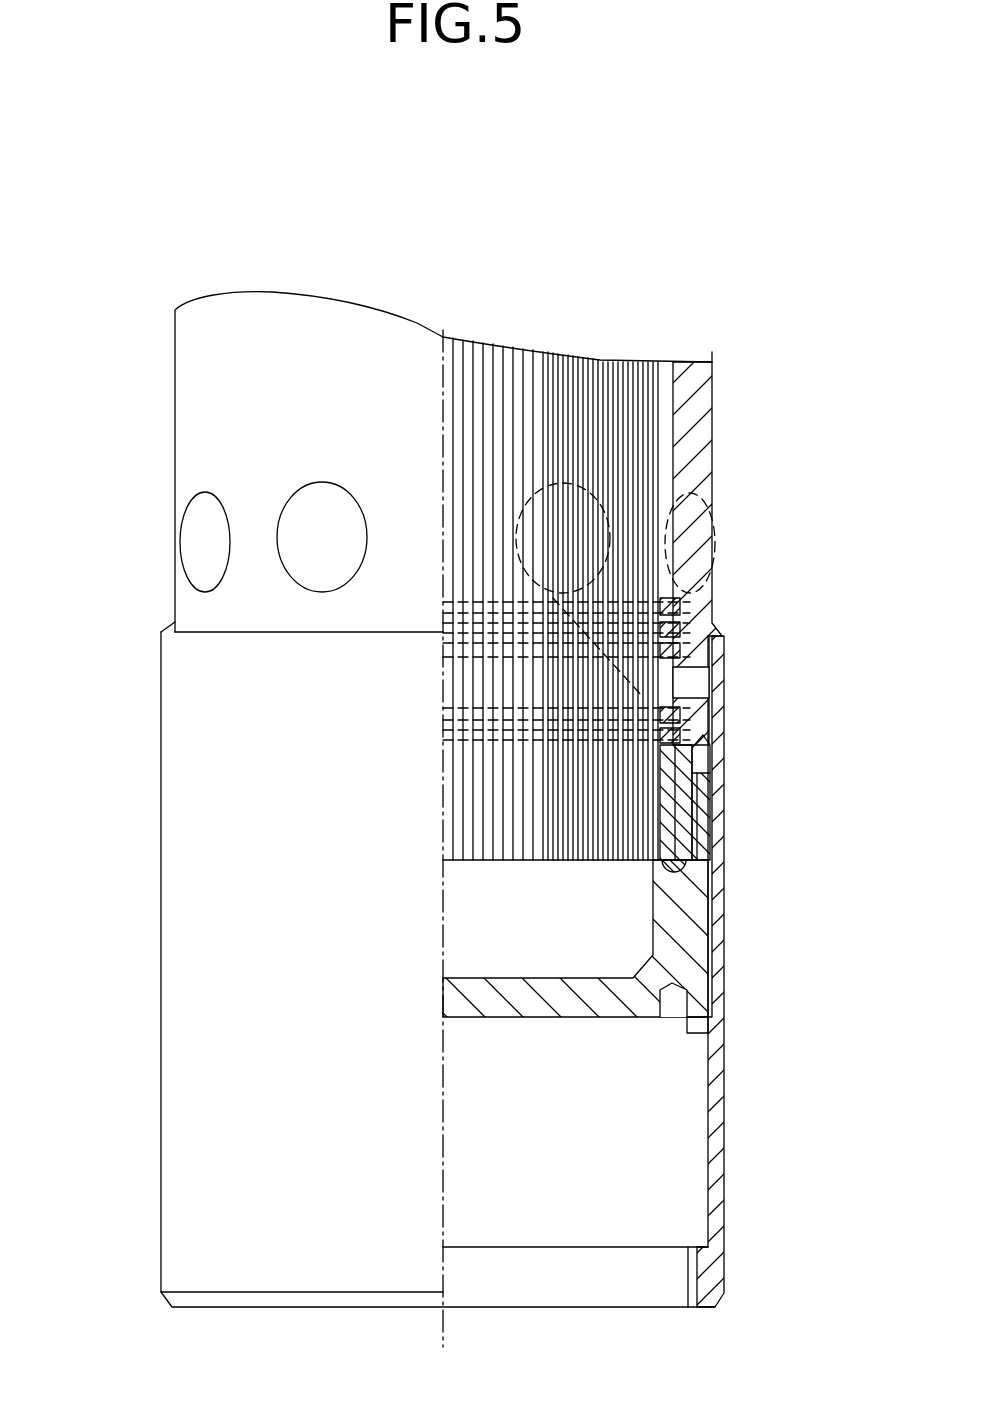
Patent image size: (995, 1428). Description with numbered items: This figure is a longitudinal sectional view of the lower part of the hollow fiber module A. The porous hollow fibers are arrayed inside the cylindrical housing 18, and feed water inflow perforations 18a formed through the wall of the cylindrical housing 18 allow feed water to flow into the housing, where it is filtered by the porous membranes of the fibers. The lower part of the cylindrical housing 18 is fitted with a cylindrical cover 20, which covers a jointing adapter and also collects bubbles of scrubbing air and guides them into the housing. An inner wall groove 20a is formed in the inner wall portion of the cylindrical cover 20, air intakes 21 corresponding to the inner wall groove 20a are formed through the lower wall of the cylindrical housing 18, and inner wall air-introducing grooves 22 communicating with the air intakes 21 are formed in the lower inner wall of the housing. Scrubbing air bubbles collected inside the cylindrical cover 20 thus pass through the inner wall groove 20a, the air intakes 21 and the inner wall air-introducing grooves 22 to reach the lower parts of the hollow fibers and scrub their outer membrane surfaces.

The cylindrical housing 18 is at (175, 352).
The feed water inflow perforations 18a is at (186, 537).
The hollow fiber module A is at (175, 453).
The cylindrical cover 20 is at (727, 1143).
The inner wall groove 20a is at (710, 753).
The air intakes 21 is at (695, 685).
The inner wall air-introducing grooves 22 is at (660, 612).